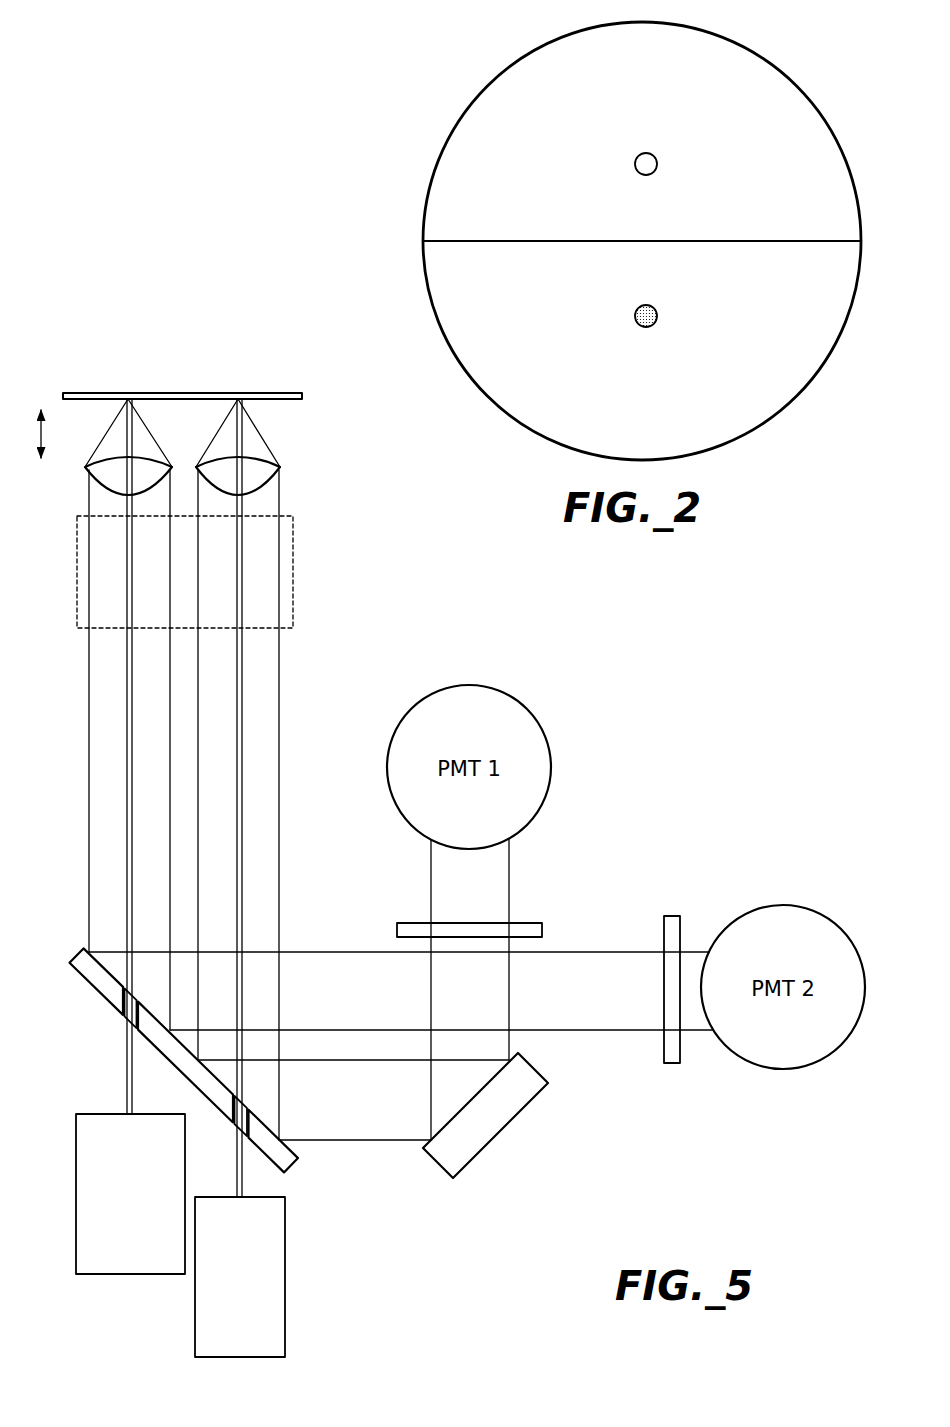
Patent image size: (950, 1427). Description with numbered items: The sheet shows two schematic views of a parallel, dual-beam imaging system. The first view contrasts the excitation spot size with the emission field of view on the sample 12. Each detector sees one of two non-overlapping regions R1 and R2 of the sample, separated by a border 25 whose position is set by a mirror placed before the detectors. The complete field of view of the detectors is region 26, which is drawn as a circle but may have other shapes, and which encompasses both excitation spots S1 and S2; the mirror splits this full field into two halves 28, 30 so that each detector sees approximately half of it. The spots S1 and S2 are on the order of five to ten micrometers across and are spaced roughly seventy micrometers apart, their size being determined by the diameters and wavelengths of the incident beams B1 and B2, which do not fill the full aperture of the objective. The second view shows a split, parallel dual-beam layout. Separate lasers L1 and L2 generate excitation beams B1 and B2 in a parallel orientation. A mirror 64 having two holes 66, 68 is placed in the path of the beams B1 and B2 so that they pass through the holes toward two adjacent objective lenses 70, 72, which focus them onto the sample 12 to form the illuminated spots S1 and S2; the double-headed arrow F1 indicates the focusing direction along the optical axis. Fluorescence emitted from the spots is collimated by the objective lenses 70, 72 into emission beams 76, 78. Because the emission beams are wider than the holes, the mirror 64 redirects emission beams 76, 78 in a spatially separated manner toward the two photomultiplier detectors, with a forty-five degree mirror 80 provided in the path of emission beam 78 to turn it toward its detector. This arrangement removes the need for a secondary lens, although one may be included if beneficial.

In FIG. 5, the sample 12 is at (254, 392).
In FIG. 2, the border 25 is at (730, 240).
In FIG. 2, the region 26 is at (820, 376).
In FIG. 2, the half of the field of view 28 is at (508, 96).
In FIG. 2, the half of the field of view 30 is at (507, 387).
In FIG. 5, the mirror 64 is at (93, 986).
In FIG. 5, the hole 66 is at (121, 1020).
In FIG. 5, the hole 68 is at (250, 1097).
In FIG. 5, the objective lens 70 is at (85, 468).
In FIG. 5, the objective lens 72 is at (281, 468).
In FIG. 5, the emission beam 76 is at (113, 801).
In FIG. 5, the emission beam 78 is at (257, 798).
In FIG. 5, the 45° mirror 80 is at (540, 1091).
In FIG. 5, the excitation light beam B1 is at (126, 728).
In FIG. 5, the excitation light beam B2 is at (243, 728).
In FIG. 5, the focus adjustment direction F1 is at (61, 434).
In FIG. 5, the laser L1 is at (104, 1274).
In FIG. 5, the laser L2 is at (285, 1330).
In FIG. 2, the excitation spot S1 is at (658, 163).
In FIG. 2, the excitation spot S2 is at (658, 316).
In FIG. 2, the region R1 is at (767, 80).
In FIG. 2, the region R2 is at (767, 402).